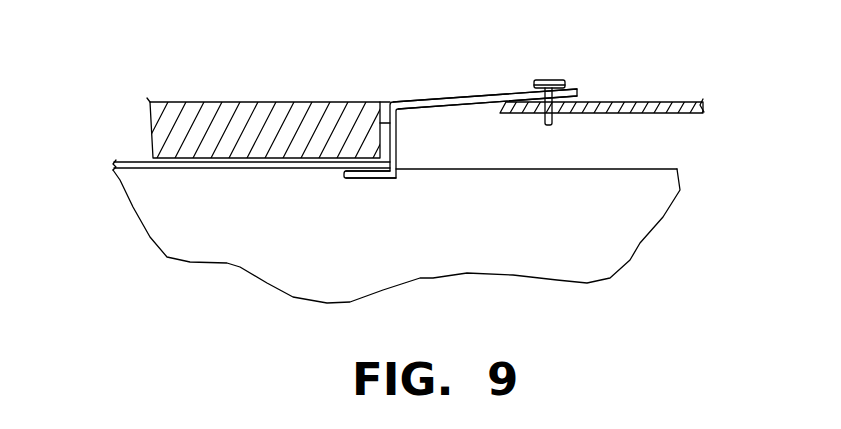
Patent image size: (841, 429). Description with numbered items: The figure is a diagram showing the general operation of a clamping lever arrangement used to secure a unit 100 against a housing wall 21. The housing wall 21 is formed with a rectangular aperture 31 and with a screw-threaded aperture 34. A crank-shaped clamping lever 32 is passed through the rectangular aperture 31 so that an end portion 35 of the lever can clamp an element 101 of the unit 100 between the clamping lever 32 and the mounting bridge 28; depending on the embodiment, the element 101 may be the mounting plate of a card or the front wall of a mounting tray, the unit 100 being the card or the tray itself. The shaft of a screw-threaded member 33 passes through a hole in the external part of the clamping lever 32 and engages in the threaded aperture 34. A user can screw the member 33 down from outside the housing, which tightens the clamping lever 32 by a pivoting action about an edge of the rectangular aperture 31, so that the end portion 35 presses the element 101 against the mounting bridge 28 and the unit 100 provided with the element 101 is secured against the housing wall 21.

The housing wall 21 is at (673, 102).
The mounting bridge 28 is at (304, 102).
The rectangular aperture 31 is at (466, 105).
The clamping lever 32 is at (451, 97).
The screw-threaded member 33 is at (552, 78).
The screw-threaded aperture 34 is at (555, 114).
The end portion 35 is at (357, 179).
The unit 100 is at (634, 240).
The element 101 is at (222, 168).